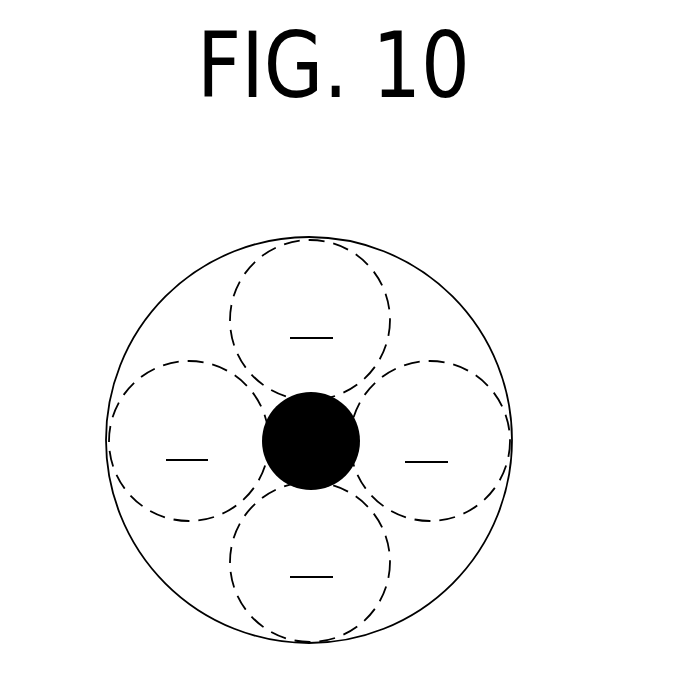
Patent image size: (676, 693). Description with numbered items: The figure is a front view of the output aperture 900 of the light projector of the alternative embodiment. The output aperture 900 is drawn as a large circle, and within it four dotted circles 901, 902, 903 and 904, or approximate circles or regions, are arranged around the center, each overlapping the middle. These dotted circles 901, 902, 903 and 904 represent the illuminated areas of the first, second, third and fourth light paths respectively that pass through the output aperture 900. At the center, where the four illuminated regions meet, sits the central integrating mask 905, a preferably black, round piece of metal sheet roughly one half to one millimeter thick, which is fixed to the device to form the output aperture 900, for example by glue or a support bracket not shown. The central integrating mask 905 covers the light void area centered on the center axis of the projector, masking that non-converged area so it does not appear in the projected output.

The output aperture 900 is at (195, 227).
The dotted circle 901 is at (135, 368).
The dotted circle 902 is at (390, 290).
The dotted circle 903 is at (470, 515).
The dotted circle 904 is at (220, 585).
The central integrating mask 905 is at (358, 423).